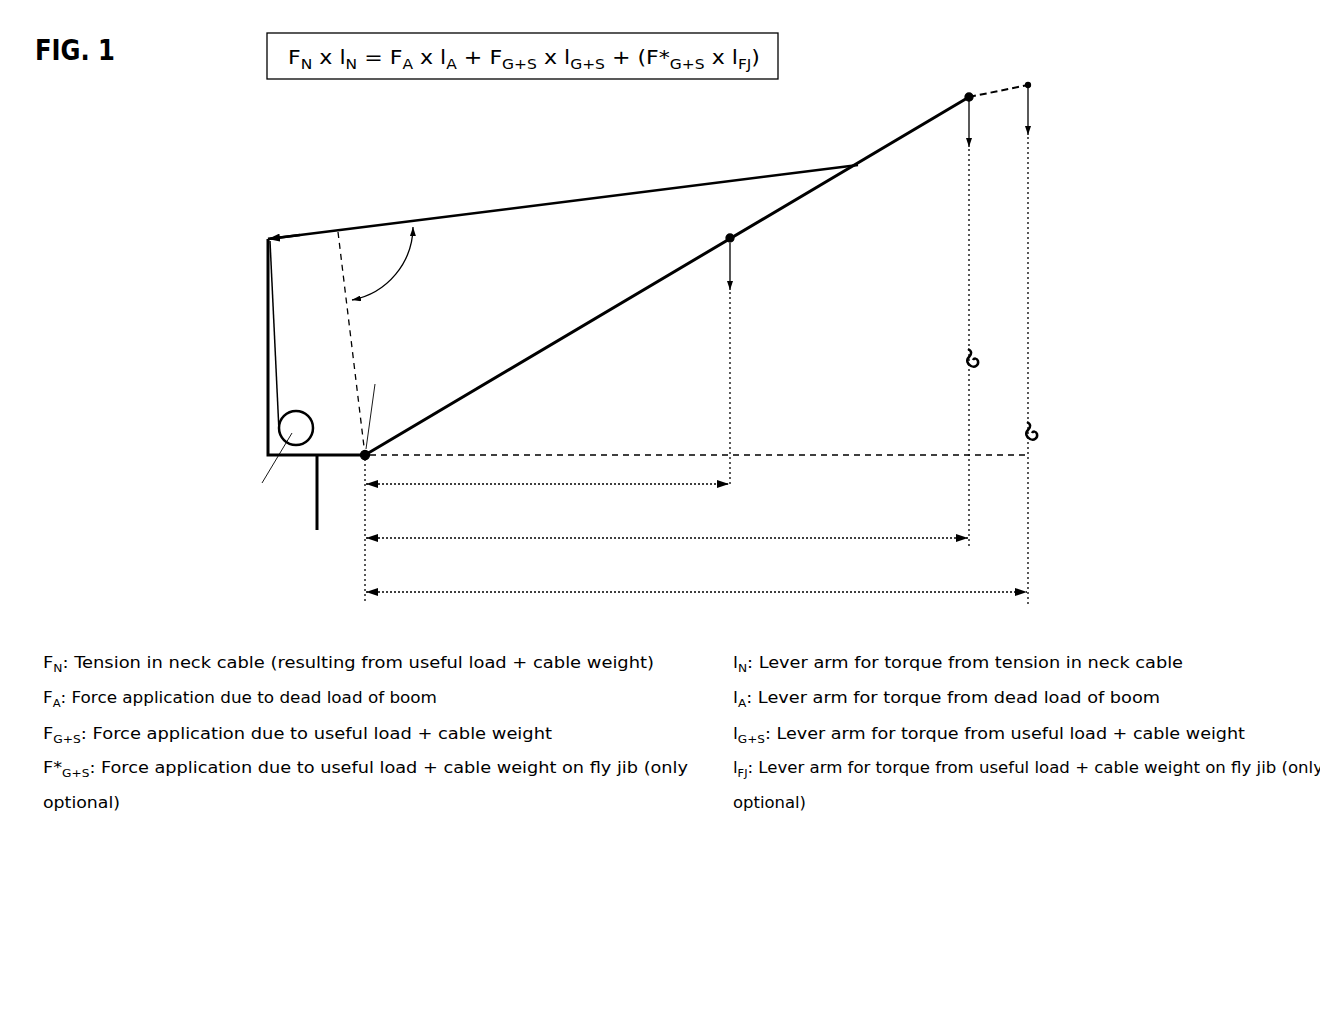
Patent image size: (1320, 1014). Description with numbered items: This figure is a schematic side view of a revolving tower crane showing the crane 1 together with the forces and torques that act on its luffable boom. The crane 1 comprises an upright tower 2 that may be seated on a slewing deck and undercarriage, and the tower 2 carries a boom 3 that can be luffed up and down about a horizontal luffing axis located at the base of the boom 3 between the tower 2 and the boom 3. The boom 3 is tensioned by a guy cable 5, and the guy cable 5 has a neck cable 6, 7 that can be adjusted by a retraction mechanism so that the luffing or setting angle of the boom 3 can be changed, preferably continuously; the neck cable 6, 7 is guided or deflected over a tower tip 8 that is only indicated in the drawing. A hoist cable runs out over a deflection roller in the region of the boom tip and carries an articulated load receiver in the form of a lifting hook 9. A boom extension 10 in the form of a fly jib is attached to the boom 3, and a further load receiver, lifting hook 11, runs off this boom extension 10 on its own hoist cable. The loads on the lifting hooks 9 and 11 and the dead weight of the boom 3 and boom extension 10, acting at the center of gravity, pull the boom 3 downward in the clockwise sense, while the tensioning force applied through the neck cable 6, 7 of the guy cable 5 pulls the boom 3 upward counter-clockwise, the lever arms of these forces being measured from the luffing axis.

The crane 1 is at (197, 207).
The tower 2 is at (313, 505).
The boom 3 is at (793, 203).
The guy cable 5 is at (700, 182).
The neck cable 6 is at (475, 211).
The neck cable 7 is at (290, 434).
The tower tip 8 is at (268, 370).
The lifting hook 9 is at (966, 355).
The boom extension 10 is at (1028, 85).
The lifting hook 11 is at (1030, 425).